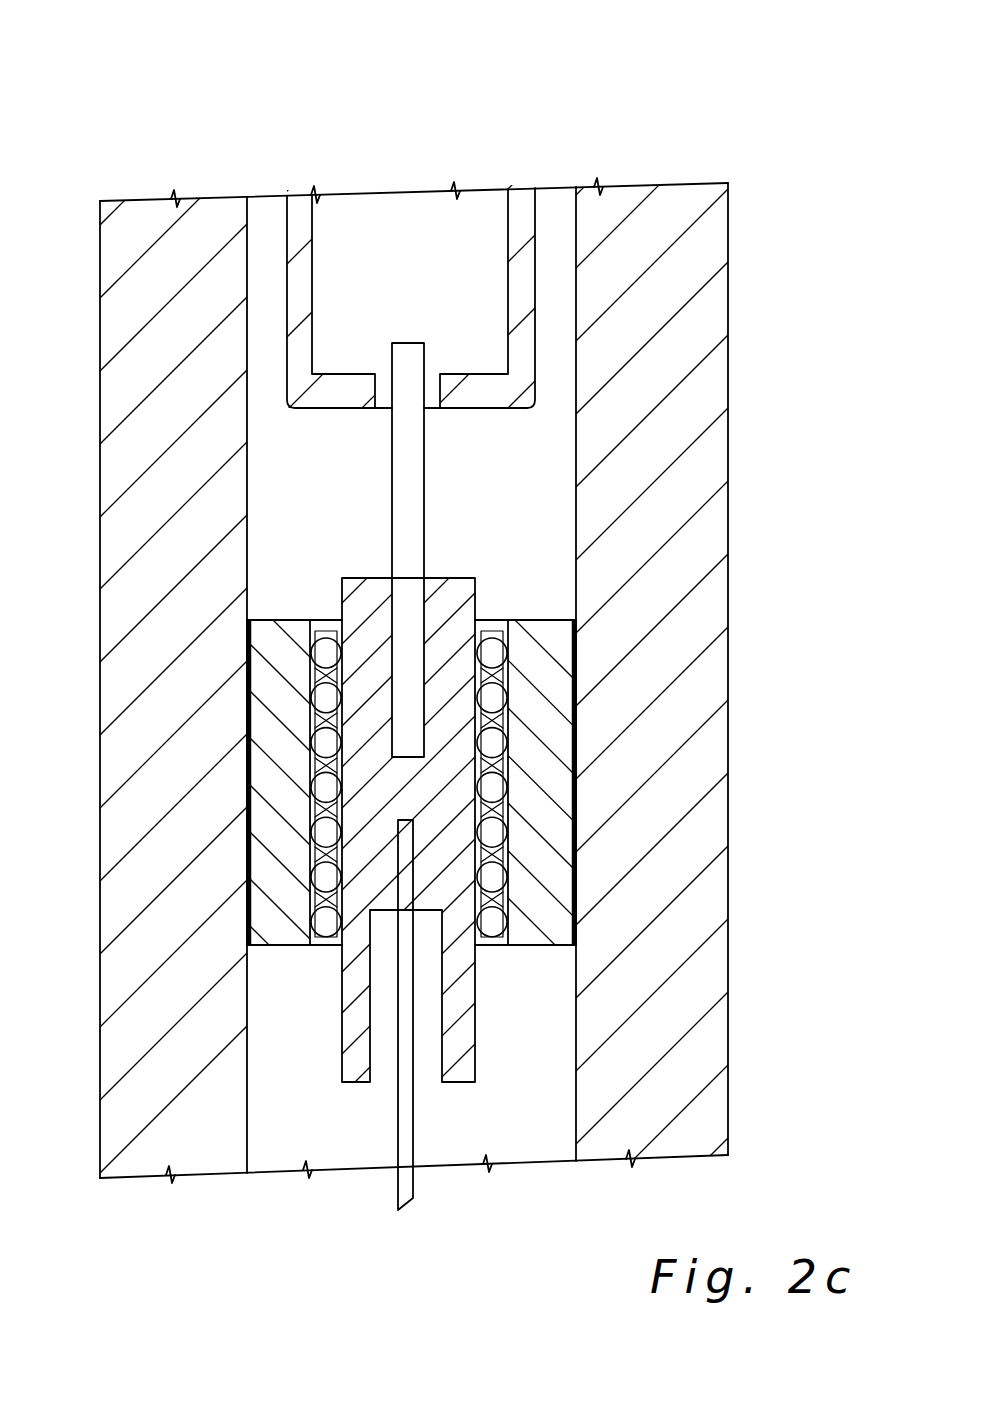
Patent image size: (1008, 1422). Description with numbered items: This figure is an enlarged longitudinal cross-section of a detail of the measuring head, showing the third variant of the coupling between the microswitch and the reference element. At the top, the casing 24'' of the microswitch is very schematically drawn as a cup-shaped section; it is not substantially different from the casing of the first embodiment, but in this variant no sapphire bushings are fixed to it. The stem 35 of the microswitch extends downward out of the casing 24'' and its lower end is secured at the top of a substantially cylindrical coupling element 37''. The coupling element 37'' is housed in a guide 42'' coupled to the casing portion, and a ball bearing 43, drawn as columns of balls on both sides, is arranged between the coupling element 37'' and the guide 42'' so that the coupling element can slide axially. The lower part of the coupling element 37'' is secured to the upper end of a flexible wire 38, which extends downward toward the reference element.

The casing 24'' is at (399, 242).
The stem 35 is at (407, 357).
The coupling element 37'' is at (470, 973).
The flexible wire 38 is at (410, 1188).
The guide 42'' is at (420, 970).
The ball bearing 43 is at (497, 633).